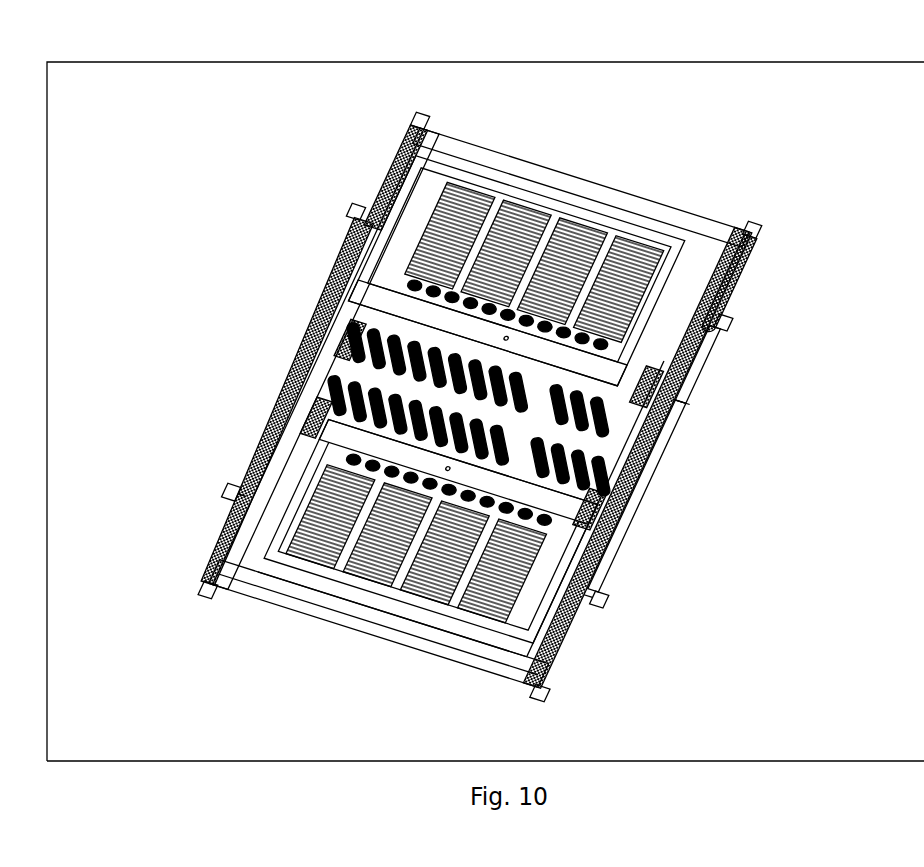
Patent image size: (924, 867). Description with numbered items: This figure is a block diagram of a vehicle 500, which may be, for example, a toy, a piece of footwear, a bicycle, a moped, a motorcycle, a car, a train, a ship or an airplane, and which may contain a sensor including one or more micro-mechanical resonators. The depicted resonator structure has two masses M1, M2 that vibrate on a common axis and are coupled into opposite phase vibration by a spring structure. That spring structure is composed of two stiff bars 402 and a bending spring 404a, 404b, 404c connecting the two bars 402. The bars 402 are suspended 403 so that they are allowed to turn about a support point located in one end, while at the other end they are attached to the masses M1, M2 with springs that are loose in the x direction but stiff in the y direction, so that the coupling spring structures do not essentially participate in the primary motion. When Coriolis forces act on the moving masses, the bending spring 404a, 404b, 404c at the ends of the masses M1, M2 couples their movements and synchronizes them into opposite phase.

The vehicle 500 is at (441, 62).
The stiff bar 402 is at (345, 268).
The suspension 403 is at (738, 310).
The bending spring 404a is at (620, 580).
The bending spring 404b is at (690, 413).
The bending spring 404c is at (715, 350).
The mass M1 is at (390, 635).
The mass M2 is at (573, 255).